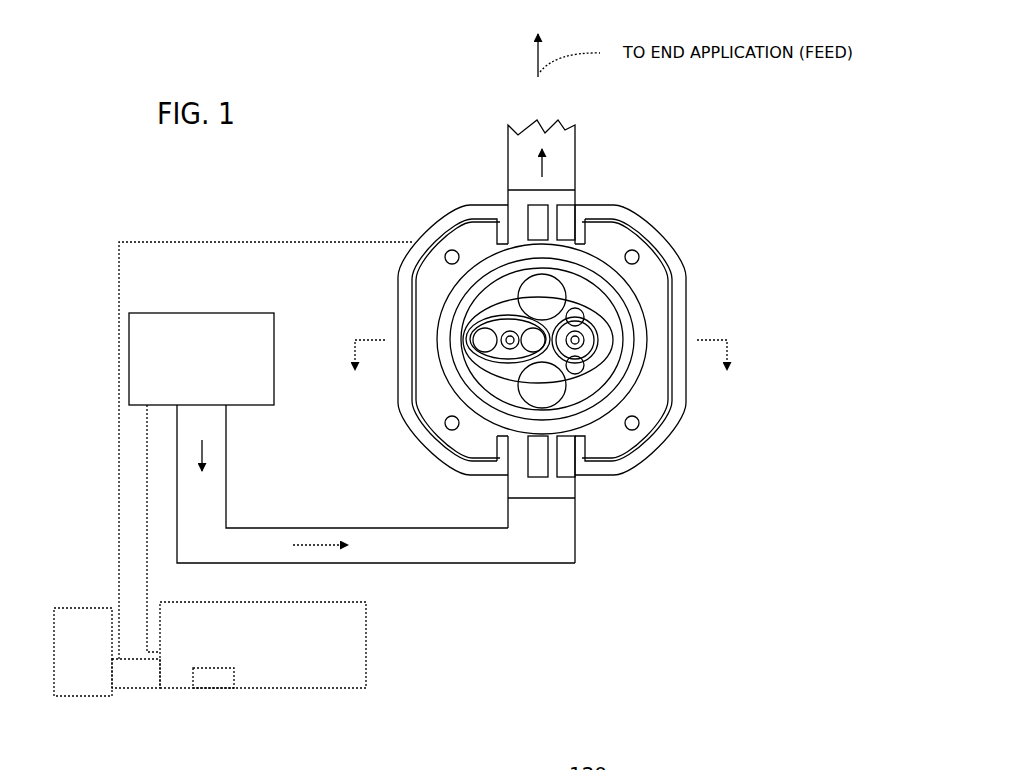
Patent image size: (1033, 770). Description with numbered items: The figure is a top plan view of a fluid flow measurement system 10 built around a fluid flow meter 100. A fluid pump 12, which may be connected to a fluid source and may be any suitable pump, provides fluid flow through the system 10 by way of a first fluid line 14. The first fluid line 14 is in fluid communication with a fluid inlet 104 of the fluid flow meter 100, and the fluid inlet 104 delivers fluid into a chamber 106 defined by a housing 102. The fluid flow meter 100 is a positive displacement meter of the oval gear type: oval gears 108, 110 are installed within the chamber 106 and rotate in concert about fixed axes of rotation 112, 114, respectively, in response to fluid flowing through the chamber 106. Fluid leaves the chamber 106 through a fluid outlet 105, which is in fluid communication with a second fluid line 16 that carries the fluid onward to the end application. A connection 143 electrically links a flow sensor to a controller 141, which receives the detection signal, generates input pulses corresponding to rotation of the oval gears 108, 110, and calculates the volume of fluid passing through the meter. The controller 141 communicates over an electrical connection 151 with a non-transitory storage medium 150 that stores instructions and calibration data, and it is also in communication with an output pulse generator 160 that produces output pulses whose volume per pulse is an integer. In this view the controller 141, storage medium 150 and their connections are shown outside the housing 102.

The fluid flow measurement system 10 is at (238, 175).
The fluid pump 12 is at (213, 328).
The first fluid line 14 is at (416, 545).
The second fluid line 16 is at (558, 150).
The fluid flow meter 100 is at (421, 195).
The housing 102 is at (638, 227).
The fluid inlet 104 is at (563, 500).
The fluid outlet 105 is at (558, 190).
The chamber 106 is at (548, 390).
The oval gear 108 is at (560, 325).
The oval gear 110 is at (478, 336).
The axis of rotation 112 is at (578, 342).
The axis of rotation 114 is at (498, 325).
The controller 141 is at (366, 615).
The connection 143 is at (115, 240).
The non-transitory storage medium 150 is at (74, 686).
The electrical connection 151 is at (125, 661).
The output pulse generator 160 is at (212, 695).